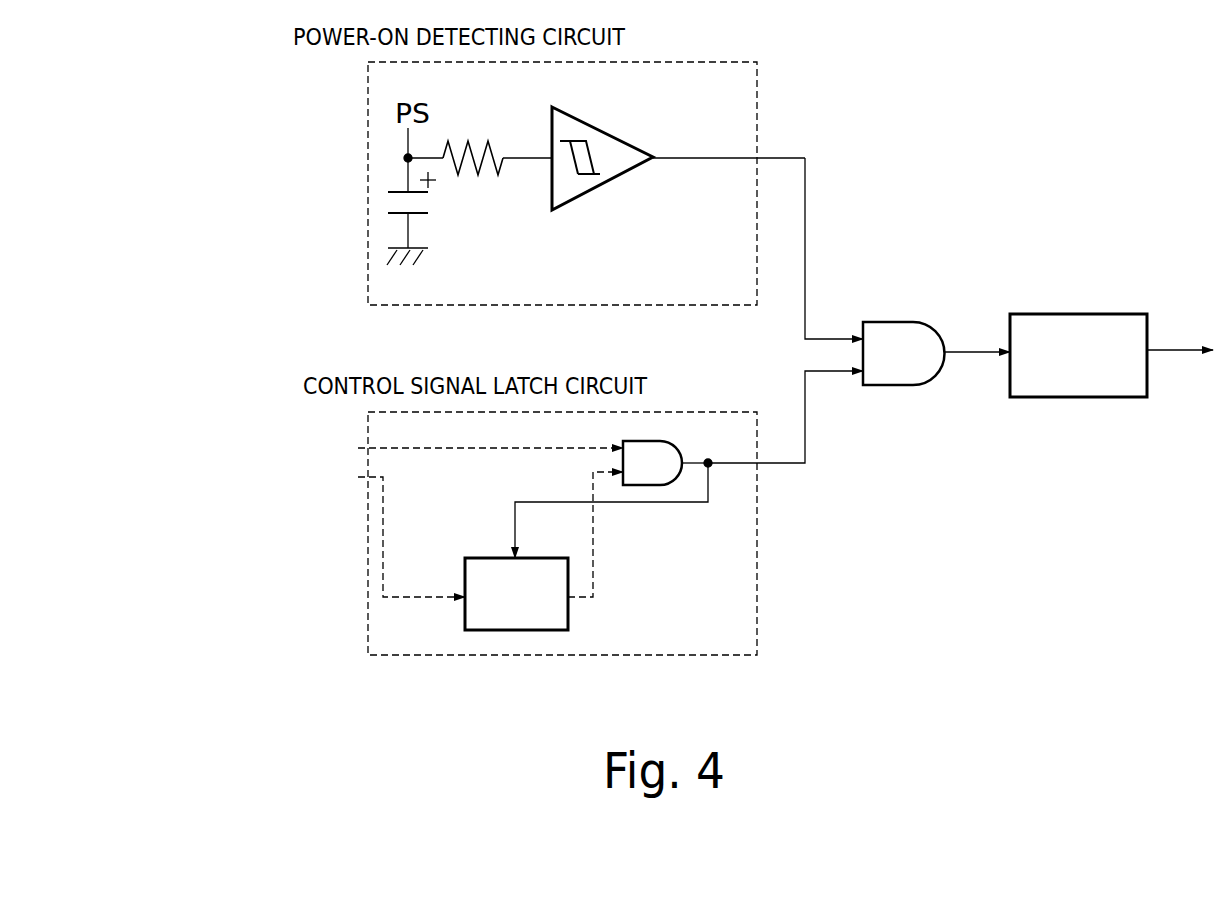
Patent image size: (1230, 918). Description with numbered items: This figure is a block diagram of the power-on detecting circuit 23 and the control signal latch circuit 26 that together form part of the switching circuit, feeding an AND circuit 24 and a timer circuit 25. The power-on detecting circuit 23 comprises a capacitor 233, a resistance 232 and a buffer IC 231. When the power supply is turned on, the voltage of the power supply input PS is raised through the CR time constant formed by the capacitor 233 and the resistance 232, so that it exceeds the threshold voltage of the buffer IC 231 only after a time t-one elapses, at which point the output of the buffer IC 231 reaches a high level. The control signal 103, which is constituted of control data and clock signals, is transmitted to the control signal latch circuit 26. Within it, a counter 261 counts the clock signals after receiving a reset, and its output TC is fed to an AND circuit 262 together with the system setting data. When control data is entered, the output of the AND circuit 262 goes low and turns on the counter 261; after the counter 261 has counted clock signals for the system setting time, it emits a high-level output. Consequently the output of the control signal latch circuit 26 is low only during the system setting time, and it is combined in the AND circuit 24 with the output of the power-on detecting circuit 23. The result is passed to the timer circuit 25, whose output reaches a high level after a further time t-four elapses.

The power-on detecting circuit 23 is at (663, 60).
The buffer IC 231 is at (608, 128).
The resistance 232 is at (495, 133).
The capacitor 233 is at (438, 208).
The AND circuit 24 is at (883, 320).
The timer circuit 25 is at (1087, 313).
The control signal latch circuit 26 is at (693, 408).
The counter 261 is at (527, 557).
The AND circuit 262 is at (662, 440).
The control signal 103 is at (378, 511).